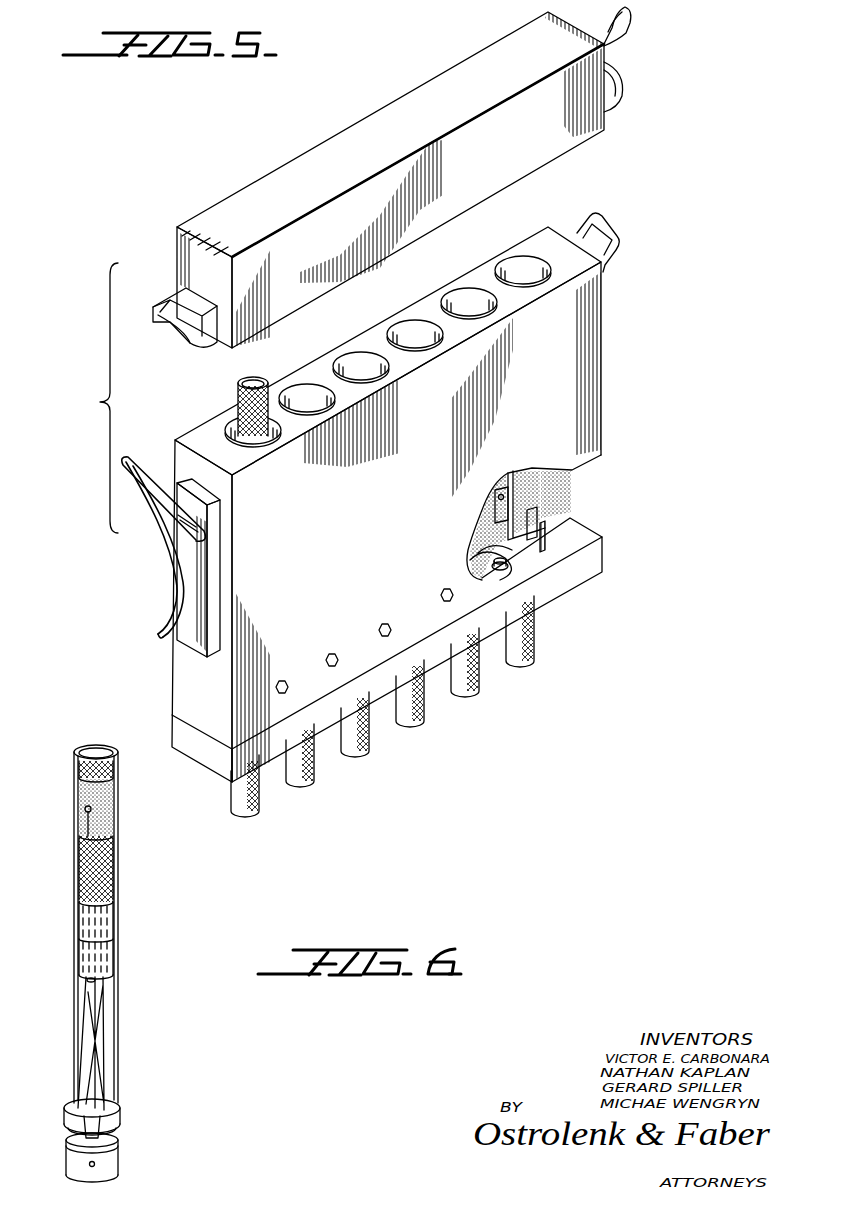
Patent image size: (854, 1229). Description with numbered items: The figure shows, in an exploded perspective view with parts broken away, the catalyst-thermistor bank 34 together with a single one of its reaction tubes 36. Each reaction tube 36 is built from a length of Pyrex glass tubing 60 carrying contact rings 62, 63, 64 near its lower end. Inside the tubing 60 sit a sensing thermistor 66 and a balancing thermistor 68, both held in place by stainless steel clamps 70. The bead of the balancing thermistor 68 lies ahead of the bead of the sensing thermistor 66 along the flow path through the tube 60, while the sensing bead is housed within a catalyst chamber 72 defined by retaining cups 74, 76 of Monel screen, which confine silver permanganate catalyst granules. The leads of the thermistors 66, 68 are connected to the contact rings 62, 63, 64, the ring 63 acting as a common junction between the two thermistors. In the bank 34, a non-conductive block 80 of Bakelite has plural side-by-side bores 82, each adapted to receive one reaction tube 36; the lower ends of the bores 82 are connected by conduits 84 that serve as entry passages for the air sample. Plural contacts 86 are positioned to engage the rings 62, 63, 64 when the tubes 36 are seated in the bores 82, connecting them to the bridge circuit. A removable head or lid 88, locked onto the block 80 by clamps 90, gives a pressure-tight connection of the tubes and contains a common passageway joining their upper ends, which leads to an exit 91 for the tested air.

In FIG. 5, the catalyst-thermistor bank 34 is at (385, 515).
In FIG. 5, the reaction tube 36 is at (263, 373).
In FIG. 6, the reaction tube 36 is at (108, 963).
In FIG. 6, the Pyrex glass tubing 60 is at (117, 1004).
In FIG. 6, the contact ring 62 is at (121, 1112).
In FIG. 6, the contact ring 63 is at (66, 1121).
In FIG. 6, the contact ring 64 is at (118, 1155).
In FIG. 6, the sensing thermistor 66 is at (78, 875).
In FIG. 6, the balancing thermistor 68 is at (108, 885).
In FIG. 6, the stainless steel clamps 70 is at (108, 924).
In FIG. 6, the catalyst chamber 72 is at (111, 797).
In FIG. 6, the retaining cup 74 is at (108, 834).
In FIG. 6, the retaining cup 76 is at (113, 771).
In FIG. 5, the non-conductive block 80 is at (601, 362).
In FIG. 5, the bores 82 is at (353, 367).
In FIG. 5, the conduits 84 is at (420, 727).
In FIG. 5, the contacts 86 is at (533, 517).
In FIG. 5, the removable head or lid 88 is at (393, 86).
In FIG. 5, the clamps 90 is at (125, 468).
In FIG. 5, the exit 91 is at (620, 44).